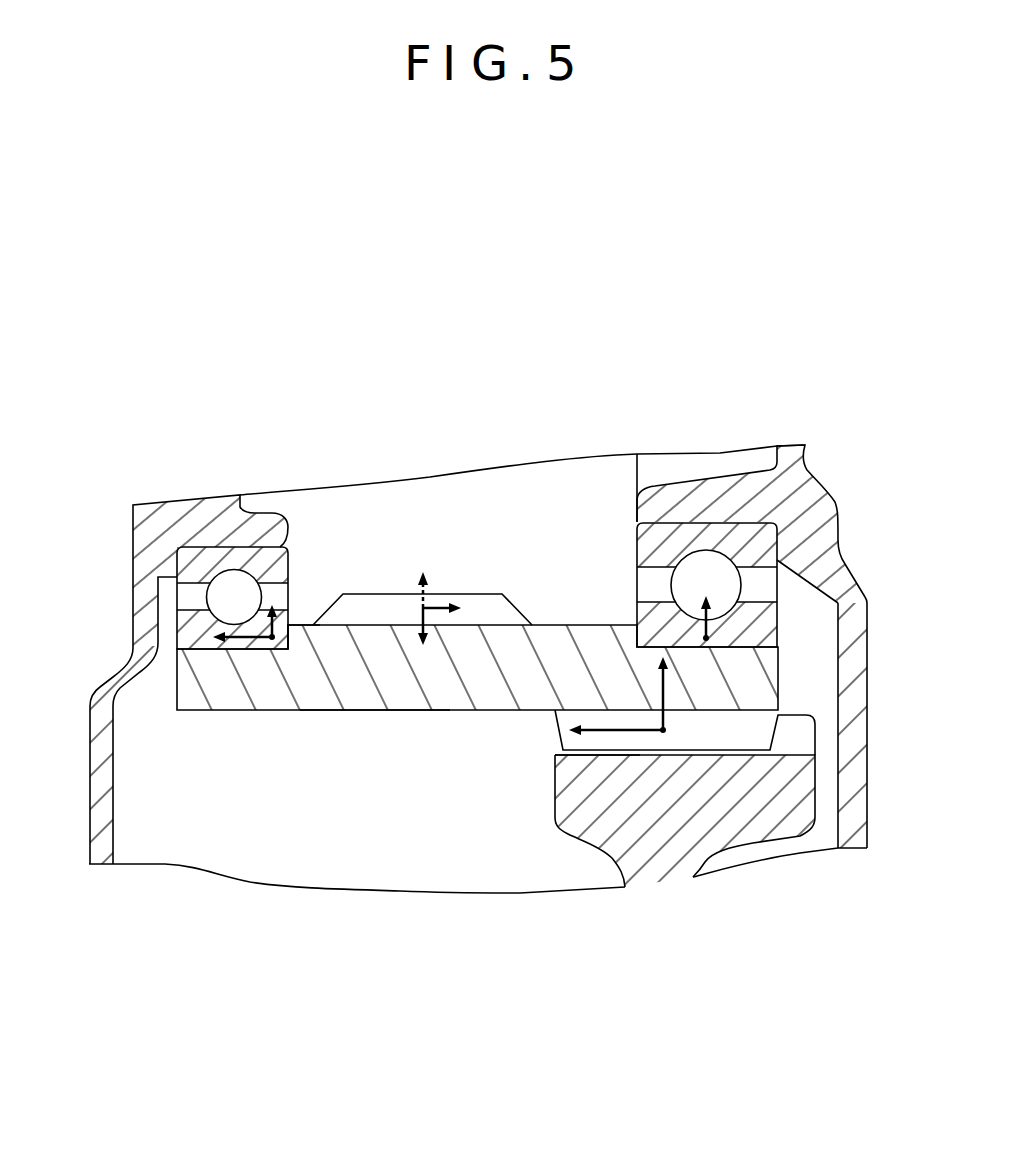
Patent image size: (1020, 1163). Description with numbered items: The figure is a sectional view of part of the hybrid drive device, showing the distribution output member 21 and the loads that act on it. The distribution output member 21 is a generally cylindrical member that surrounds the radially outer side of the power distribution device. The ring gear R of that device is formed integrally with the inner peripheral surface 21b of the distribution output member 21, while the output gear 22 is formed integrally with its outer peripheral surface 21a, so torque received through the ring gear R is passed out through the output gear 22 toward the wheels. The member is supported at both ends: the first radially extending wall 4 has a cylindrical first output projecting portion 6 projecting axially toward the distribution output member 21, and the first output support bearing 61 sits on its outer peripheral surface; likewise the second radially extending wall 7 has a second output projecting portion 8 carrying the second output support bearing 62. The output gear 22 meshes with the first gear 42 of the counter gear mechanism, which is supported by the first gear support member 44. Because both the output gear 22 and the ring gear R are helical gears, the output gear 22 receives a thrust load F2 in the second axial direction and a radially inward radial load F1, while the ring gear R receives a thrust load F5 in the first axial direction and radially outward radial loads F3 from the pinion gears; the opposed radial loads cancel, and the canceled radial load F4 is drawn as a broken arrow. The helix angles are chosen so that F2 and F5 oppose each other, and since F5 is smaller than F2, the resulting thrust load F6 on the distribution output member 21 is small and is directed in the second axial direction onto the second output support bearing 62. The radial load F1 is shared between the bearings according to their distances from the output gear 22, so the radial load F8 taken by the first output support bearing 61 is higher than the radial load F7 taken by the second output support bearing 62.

The first radially extending wall 4 is at (853, 658).
The first output projecting portion 6 is at (695, 486).
The second radially extending wall 7 is at (90, 710).
The second output projecting portion 8 is at (228, 522).
The distribution output member 21 is at (346, 690).
The outer peripheral surface 21a is at (366, 711).
The inner peripheral surface 21b is at (295, 623).
The output gear 22 is at (767, 730).
The first gear 42 is at (555, 755).
The first gear support member 44 is at (652, 880).
The first output support bearing 61 is at (735, 588).
The second output support bearing 62 is at (217, 600).
The ring gear R is at (493, 598).
The radial load F1 is at (664, 698).
The thrust load F2 is at (585, 727).
The radial load F3 is at (420, 620).
The radial load F4 is at (434, 586).
The thrust load F5 is at (444, 606).
The thrust load F6 is at (240, 645).
The radial load F7 is at (285, 640).
The radial load F8 is at (697, 630).